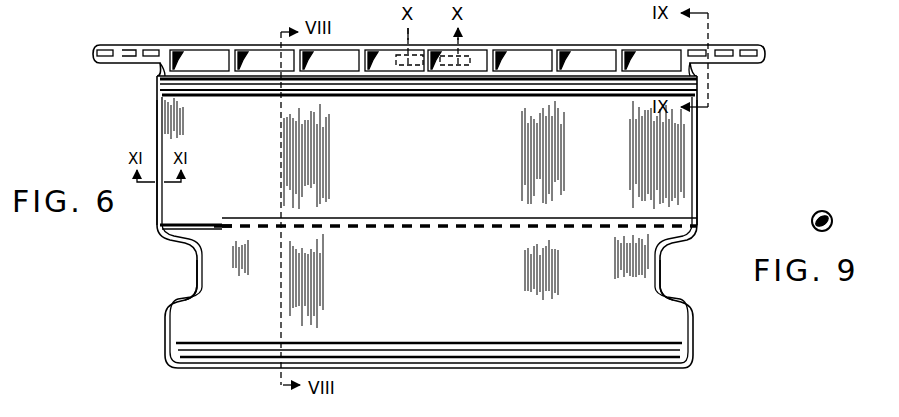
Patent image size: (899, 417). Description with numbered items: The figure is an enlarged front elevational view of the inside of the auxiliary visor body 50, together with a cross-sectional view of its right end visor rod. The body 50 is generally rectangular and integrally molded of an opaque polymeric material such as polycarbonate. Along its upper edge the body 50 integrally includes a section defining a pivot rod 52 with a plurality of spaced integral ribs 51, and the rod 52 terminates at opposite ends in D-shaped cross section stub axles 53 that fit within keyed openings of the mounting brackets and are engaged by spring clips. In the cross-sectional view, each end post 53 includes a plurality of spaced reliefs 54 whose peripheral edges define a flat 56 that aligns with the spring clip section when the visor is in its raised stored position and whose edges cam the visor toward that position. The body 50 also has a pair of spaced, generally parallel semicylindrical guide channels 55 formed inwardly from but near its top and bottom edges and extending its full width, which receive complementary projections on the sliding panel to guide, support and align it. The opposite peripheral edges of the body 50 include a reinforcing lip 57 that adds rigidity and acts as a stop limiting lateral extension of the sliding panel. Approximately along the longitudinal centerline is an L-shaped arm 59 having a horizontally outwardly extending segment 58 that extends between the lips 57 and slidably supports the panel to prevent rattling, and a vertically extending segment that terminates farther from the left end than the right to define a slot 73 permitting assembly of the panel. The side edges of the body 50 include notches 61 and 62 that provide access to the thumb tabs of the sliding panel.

In FIG. 6, the body 50 is at (702, 197).
In FIG. 6, the ribs 51 is at (418, 52).
In FIG. 6, the pivot rod 52 is at (538, 58).
In FIG. 6, the stub axles 53 is at (114, 48).
In FIG. 9, the stub axles 53 is at (826, 212).
In FIG. 9, the reliefs 54 is at (814, 217).
In FIG. 6, the guide channels 55 is at (530, 83).
In FIG. 9, the flat 56 is at (814, 226).
In FIG. 6, the reinforcing lip 57 is at (698, 170).
In FIG. 6, the horizontally outwardly extending segment 58 is at (208, 227).
In FIG. 6, the L-shaped arm 59 is at (464, 207).
In FIG. 6, the notch 61 is at (184, 273).
In FIG. 6, the notch 62 is at (679, 273).
In FIG. 6, the slot 73 is at (220, 225).